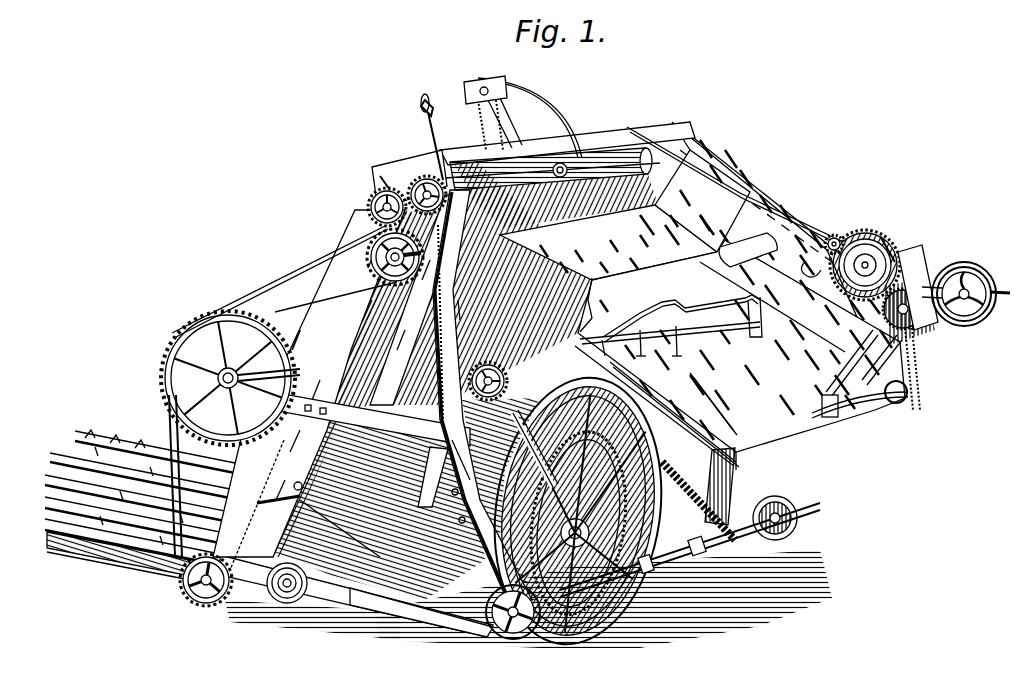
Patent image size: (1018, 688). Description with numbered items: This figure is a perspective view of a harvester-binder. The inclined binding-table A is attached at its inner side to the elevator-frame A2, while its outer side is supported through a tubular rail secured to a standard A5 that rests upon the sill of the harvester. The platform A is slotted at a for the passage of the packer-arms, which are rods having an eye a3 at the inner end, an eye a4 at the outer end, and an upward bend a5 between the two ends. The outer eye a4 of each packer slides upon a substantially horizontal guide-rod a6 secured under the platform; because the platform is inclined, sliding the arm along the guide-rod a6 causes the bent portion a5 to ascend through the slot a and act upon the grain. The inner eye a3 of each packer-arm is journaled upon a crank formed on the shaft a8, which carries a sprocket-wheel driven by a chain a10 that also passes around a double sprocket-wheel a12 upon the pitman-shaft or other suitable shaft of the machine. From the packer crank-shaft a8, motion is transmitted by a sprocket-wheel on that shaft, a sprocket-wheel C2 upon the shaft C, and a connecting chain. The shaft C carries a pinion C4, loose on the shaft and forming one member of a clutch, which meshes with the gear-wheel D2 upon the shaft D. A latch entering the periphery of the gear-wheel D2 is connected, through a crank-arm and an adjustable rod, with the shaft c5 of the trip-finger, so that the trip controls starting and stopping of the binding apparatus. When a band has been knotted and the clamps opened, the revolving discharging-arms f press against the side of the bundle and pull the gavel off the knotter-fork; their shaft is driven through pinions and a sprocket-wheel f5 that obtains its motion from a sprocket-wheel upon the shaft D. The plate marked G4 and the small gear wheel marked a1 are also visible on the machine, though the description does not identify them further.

The inclined binding-table A is at (722, 305).
The elevator-frame A2 is at (313, 383).
The standard A5 is at (738, 470).
The slot a is at (681, 315).
The gear wheel on post a1 is at (470, 381).
The eye at inner end of packer-arm a3 is at (594, 305).
The eye at outer end of packer-arm a4 is at (656, 353).
The upward bend of packer-arm a5 is at (763, 313).
The guide-rod a6 is at (700, 362).
The packer crank-shaft a8 is at (604, 358).
The chain a10 is at (466, 497).
The double sprocket-wheel a12 is at (518, 640).
The shaft C is at (966, 300).
The sprocket-wheel C2 is at (966, 291).
The pinion C4 is at (836, 236).
The shaft of trip-finger c5 is at (815, 256).
The shaft D is at (894, 256).
The gear-wheel D2 is at (865, 254).
The discharging-arms f is at (862, 373).
The sprocket-wheel f5 is at (899, 401).
The bracket plate G4 is at (748, 250).